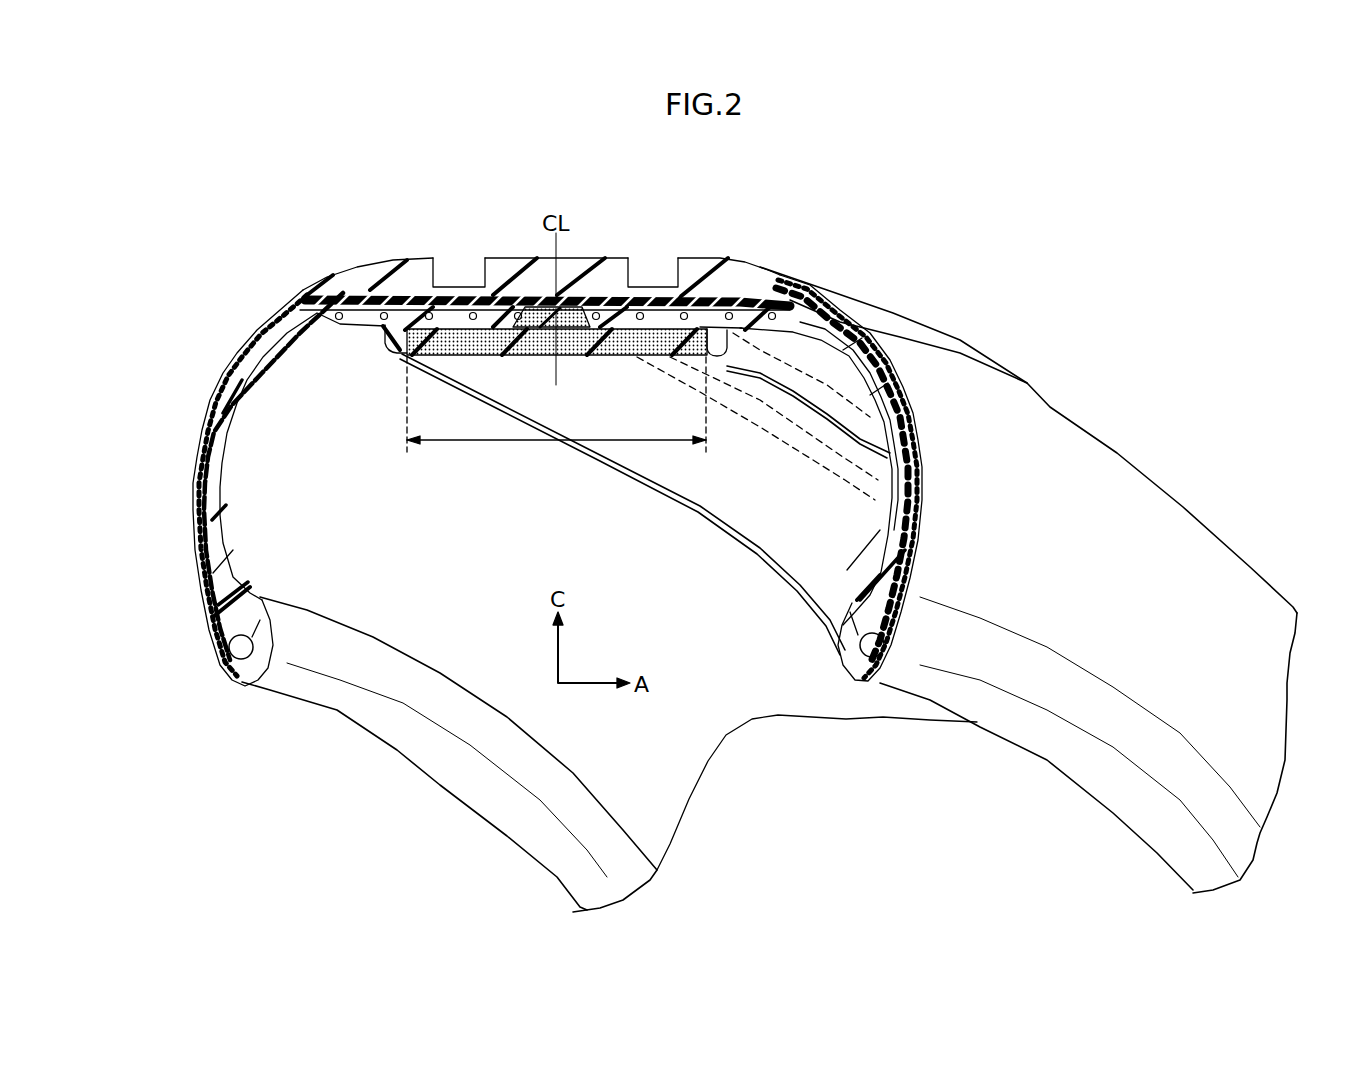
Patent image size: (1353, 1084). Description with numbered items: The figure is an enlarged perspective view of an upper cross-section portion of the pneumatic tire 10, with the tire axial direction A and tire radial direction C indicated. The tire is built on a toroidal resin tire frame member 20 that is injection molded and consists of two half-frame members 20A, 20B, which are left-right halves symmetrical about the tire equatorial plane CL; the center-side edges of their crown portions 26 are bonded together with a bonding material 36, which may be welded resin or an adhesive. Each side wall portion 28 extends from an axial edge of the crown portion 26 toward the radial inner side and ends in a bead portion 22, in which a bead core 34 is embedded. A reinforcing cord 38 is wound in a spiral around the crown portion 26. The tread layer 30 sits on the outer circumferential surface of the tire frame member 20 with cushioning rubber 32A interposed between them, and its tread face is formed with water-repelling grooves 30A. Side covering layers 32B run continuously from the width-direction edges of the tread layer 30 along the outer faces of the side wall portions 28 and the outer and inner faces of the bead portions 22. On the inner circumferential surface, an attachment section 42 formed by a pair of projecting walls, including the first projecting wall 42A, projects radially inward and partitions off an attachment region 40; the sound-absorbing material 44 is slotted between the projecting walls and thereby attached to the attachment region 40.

The pneumatic tire 10 is at (963, 328).
The tire frame member 20 is at (257, 335).
The half-frame member 20A is at (222, 370).
The half-frame member 20B is at (881, 362).
The bead portion 22 is at (888, 627).
The crown portion 26 is at (383, 331).
The side wall portion 28 is at (893, 487).
The tread layer 30 is at (414, 280).
The water-repelling groove 30A is at (648, 275).
The cushioning rubber 32A is at (708, 305).
The side covering layer 32B is at (920, 445).
The bead core 34 is at (880, 646).
The bonding material 36 is at (576, 322).
The reinforcing cord 38 is at (772, 312).
The attachment region 40 is at (556, 428).
The attachment section 42 is at (556, 404).
The first projecting wall 42A is at (726, 362).
The sound-absorbing material 44 is at (606, 358).